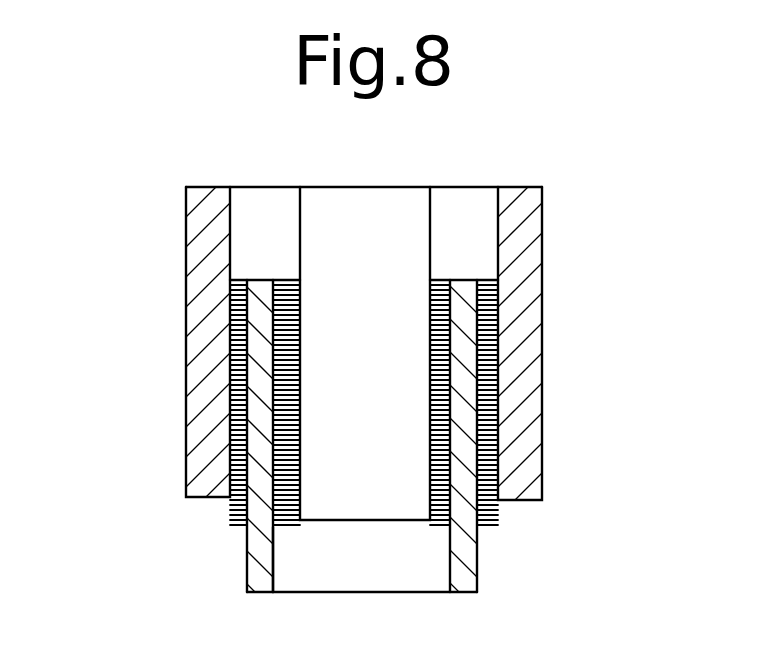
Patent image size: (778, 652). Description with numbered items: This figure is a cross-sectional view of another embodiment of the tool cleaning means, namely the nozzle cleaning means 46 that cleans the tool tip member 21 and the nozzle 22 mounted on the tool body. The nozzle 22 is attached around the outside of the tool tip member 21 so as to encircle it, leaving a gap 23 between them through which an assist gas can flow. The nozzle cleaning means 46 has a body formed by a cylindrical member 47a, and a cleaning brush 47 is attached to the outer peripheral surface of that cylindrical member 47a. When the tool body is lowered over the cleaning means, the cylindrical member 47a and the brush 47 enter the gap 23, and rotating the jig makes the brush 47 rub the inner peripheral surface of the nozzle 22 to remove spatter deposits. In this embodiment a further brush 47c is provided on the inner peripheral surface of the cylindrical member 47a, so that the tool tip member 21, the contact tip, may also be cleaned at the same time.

The tool tip member 21 is at (392, 281).
The nozzle 22 is at (523, 229).
The gap 23 is at (461, 212).
The nozzle cleaning means 46 is at (458, 448).
The cleaning brush 47 is at (478, 532).
The cylindrical member 47a is at (464, 578).
The brush 47c is at (272, 540).